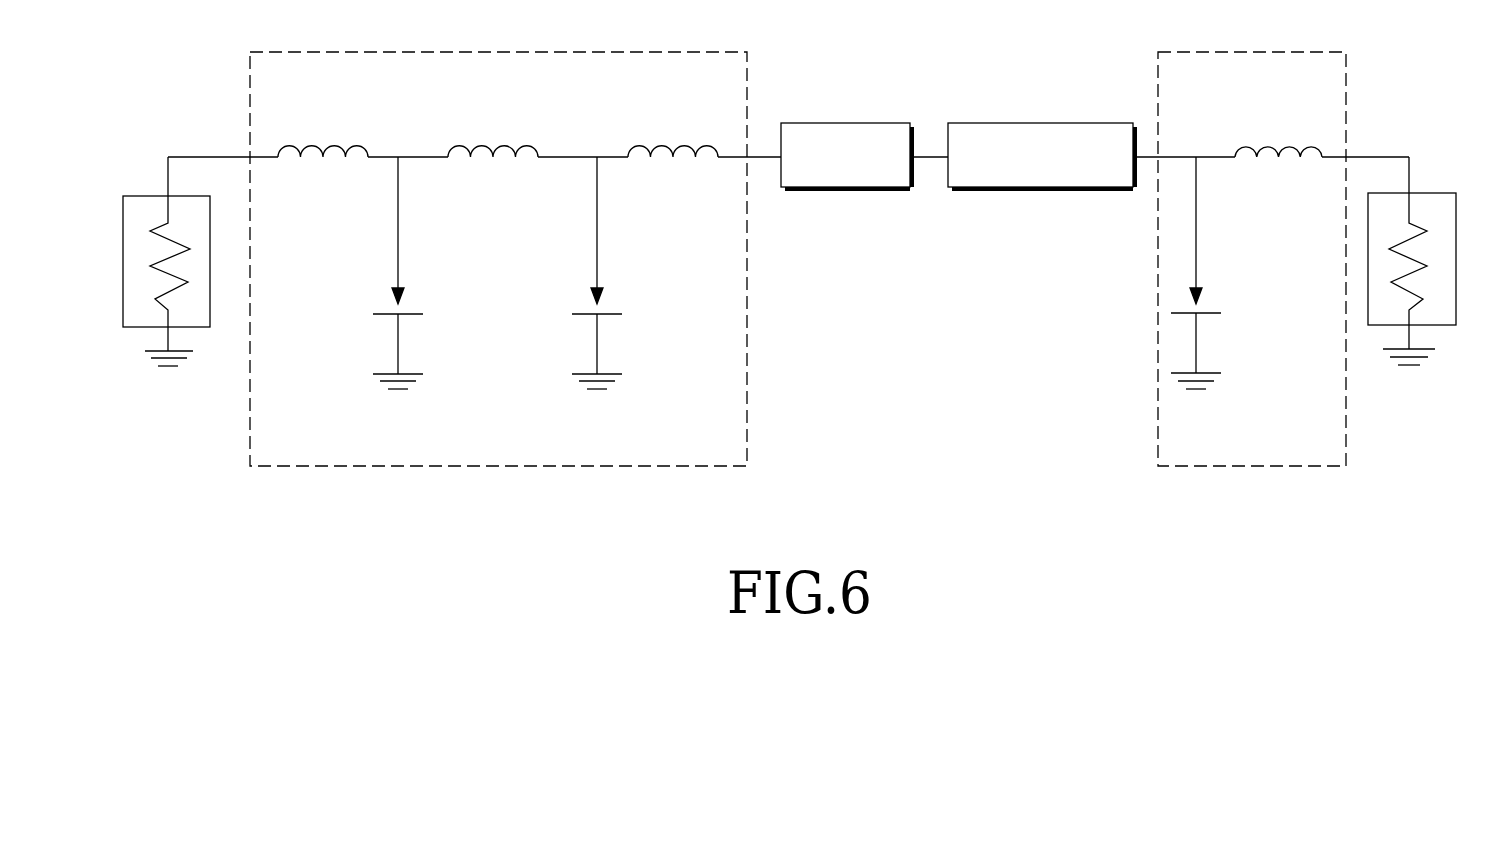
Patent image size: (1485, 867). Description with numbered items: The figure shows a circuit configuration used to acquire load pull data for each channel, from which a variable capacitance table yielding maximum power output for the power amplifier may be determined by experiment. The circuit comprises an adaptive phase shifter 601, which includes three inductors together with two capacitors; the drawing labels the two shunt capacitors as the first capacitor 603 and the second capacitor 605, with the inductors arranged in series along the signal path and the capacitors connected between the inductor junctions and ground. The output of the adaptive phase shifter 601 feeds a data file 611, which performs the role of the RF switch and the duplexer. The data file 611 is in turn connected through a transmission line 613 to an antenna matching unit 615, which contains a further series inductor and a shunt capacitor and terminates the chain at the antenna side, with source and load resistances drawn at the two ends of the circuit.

The adaptive phase shifter 601 is at (723, 40).
The first capacitor C1 603 is at (443, 273).
The second capacitor C2 605 is at (643, 273).
The data file 611 is at (886, 111).
The transmission line 613 is at (1080, 111).
The antenna matching unit 615 is at (1334, 40).